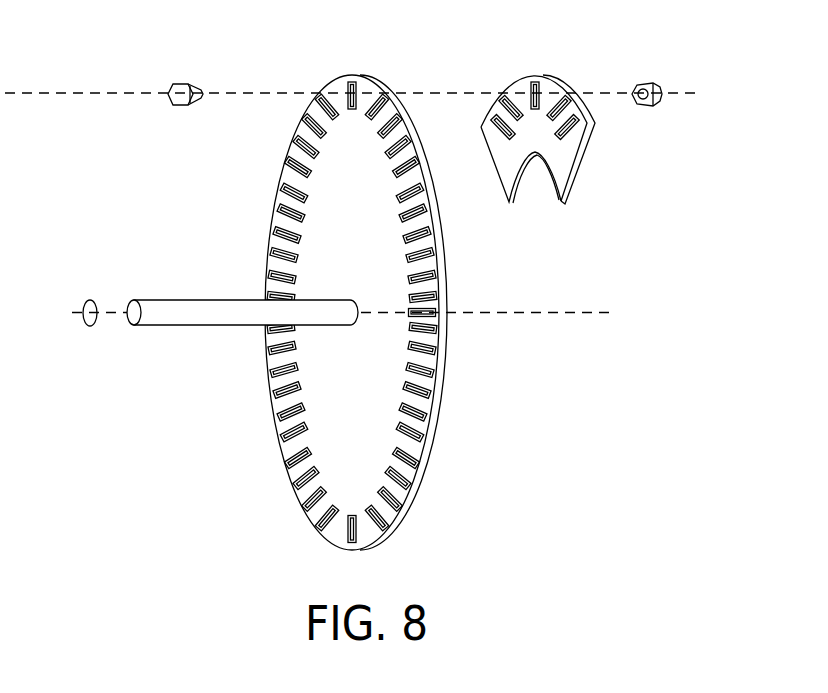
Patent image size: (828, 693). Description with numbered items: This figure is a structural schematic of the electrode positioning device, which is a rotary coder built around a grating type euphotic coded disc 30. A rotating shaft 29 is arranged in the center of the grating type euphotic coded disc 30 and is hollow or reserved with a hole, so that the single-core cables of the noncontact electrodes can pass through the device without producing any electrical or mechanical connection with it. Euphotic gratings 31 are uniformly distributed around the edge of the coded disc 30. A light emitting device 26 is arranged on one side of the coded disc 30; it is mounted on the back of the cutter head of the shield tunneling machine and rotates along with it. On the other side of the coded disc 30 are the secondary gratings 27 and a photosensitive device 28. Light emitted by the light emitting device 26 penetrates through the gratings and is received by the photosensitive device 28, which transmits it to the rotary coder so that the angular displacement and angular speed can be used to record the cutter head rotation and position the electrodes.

The light emitting device 26 is at (179, 87).
The secondary gratings 27 is at (516, 95).
The photosensitive device 28 is at (661, 89).
The rotating shaft 29 is at (173, 326).
The grating type euphotic coded disc 30 is at (343, 453).
The euphotic gratings 31 is at (425, 378).